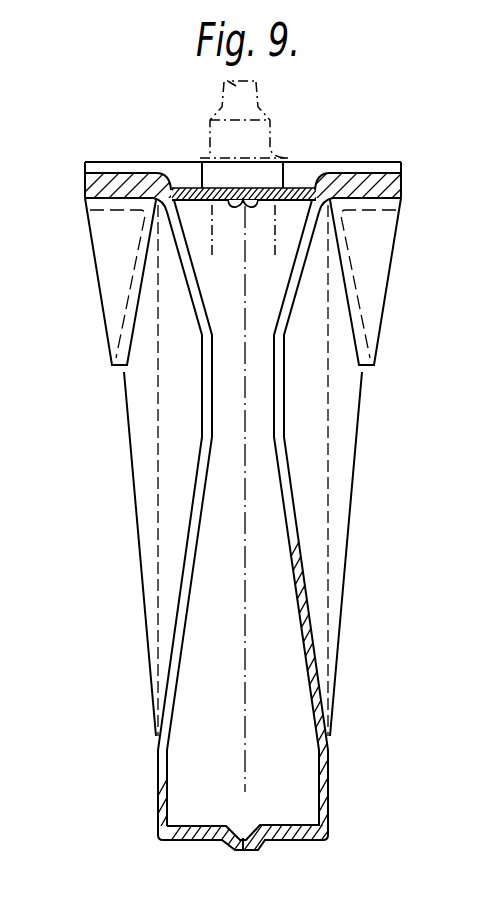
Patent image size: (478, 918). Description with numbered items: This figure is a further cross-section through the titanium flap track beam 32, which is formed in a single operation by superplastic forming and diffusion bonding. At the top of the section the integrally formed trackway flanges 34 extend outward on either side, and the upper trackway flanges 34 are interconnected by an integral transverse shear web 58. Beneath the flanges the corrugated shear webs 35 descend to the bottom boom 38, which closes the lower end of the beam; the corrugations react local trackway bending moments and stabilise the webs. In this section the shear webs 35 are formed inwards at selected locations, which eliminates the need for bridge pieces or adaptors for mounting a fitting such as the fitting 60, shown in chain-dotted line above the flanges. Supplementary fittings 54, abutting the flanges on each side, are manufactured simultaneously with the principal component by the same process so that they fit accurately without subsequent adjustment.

The fitting 60 is at (214, 141).
The integral transverse shear web 58 is at (296, 190).
The trackway flanges 34 is at (110, 192).
The supplementary fittings 54 is at (91, 297).
The titanium flap track beam 32 is at (282, 392).
The corrugated shear webs 35 is at (195, 483).
The bottom boom 38 is at (157, 832).